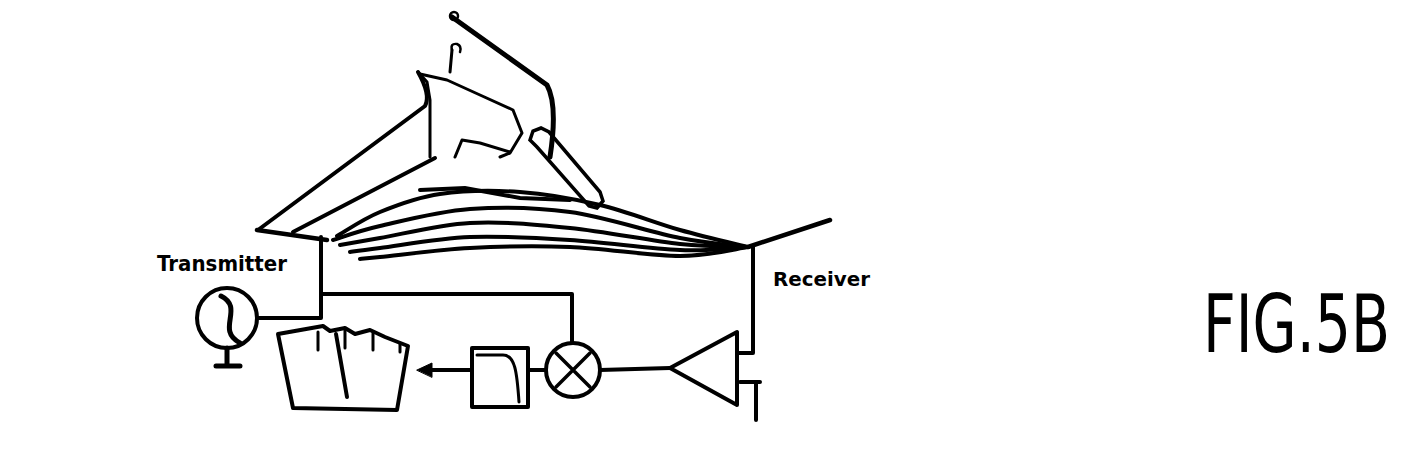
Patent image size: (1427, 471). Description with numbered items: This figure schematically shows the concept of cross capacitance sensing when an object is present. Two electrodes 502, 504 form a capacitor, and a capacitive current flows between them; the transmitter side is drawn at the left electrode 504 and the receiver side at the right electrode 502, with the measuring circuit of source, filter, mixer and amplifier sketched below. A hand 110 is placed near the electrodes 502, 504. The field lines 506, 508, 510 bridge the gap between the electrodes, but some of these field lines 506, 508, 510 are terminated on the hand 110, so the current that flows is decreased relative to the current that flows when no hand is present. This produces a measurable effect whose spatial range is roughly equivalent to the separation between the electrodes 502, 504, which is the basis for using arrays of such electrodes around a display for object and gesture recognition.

The hand 110 is at (520, 107).
The electrode 502 is at (830, 225).
The electrode 504 is at (257, 230).
The field line 506 is at (390, 110).
The field line 508 is at (377, 177).
The field line 510 is at (362, 220).